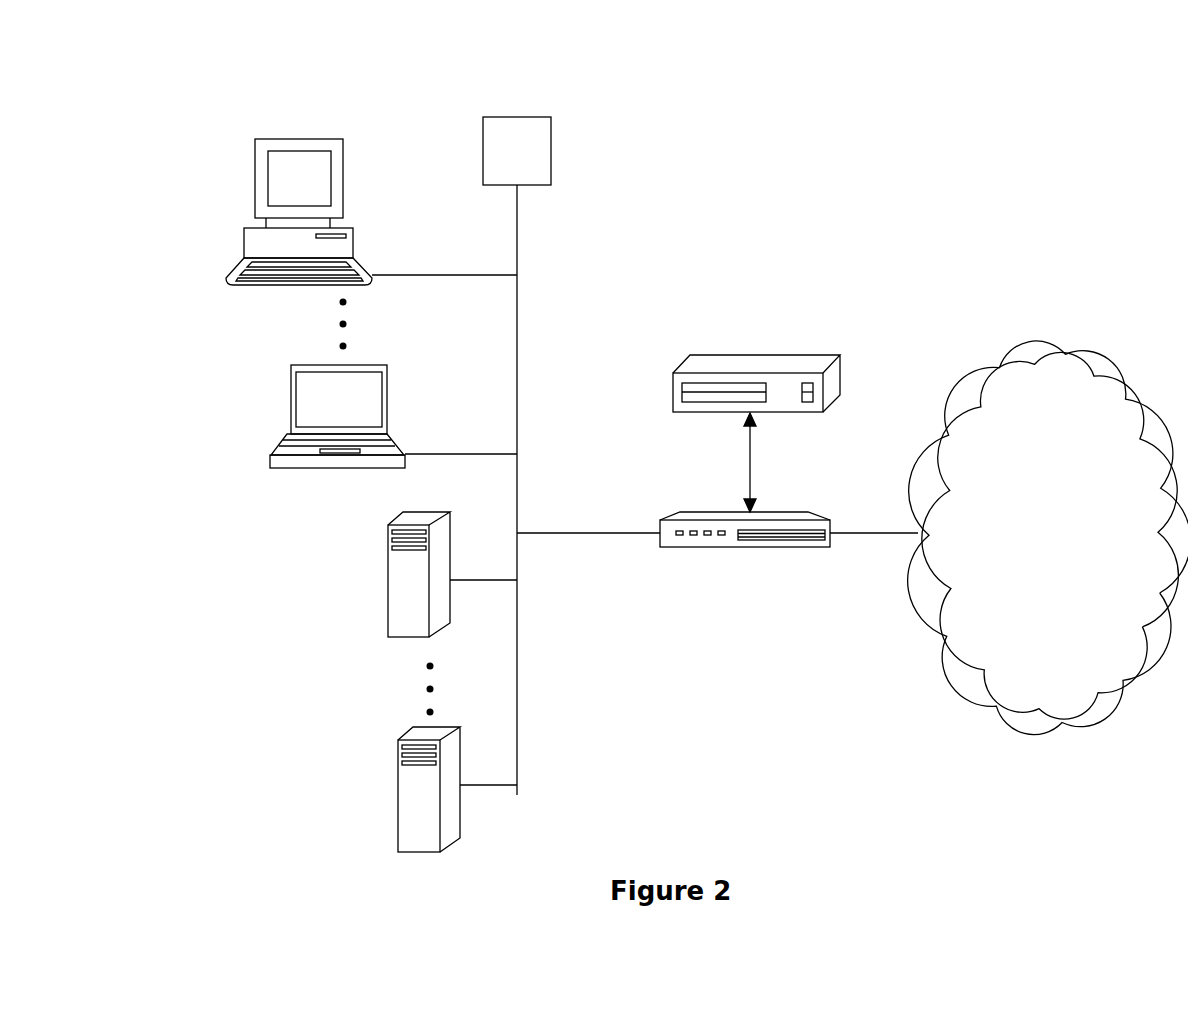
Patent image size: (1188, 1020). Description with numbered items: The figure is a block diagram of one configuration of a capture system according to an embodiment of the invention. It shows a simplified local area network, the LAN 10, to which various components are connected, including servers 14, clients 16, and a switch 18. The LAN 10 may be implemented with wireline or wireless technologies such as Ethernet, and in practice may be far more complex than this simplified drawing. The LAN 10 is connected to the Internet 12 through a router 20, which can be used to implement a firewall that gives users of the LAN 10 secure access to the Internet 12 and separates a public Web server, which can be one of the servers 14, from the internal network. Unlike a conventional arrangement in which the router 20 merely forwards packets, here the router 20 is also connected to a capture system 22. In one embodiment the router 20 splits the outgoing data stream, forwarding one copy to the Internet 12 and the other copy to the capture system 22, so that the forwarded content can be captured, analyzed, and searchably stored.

The local area network (LAN) 10 is at (322, 490).
The Internet 12 is at (1048, 538).
The servers 14 is at (372, 602).
The clients 16 is at (227, 252).
The switch 18 is at (528, 107).
The router 20 is at (746, 557).
The capture system 22 is at (762, 344).